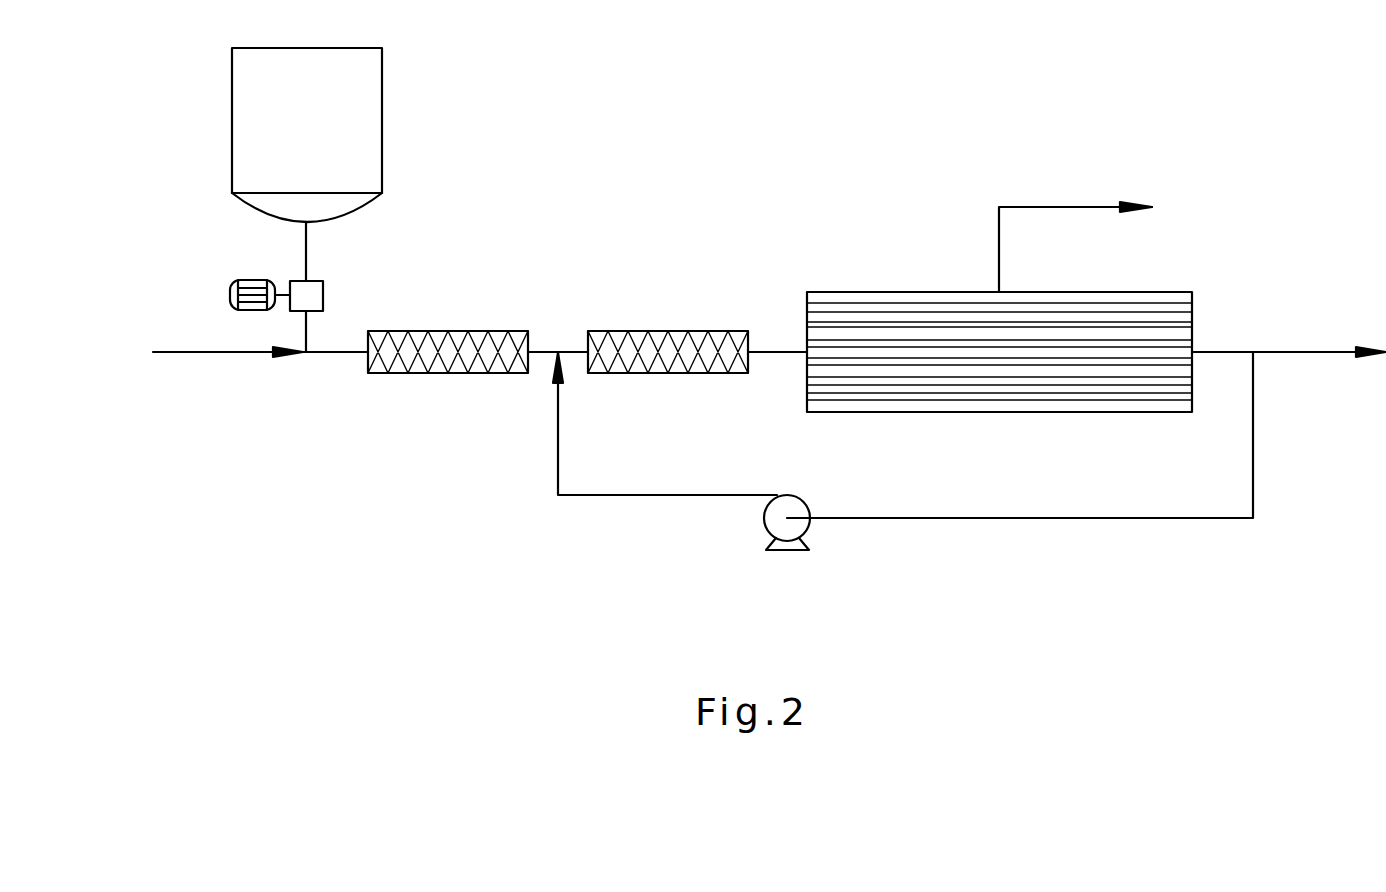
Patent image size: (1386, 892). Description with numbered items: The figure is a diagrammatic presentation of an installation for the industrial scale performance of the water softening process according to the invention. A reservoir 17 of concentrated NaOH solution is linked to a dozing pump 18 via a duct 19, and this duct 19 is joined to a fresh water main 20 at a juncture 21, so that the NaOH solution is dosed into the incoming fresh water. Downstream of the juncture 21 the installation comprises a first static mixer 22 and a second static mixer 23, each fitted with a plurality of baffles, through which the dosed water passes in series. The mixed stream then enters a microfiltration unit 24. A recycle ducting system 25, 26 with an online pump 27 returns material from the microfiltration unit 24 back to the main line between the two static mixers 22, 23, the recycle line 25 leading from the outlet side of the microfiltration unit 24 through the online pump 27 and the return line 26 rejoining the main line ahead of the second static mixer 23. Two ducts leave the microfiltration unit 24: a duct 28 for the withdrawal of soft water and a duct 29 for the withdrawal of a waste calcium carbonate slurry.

The reservoir 17 is at (368, 112).
The dozing pump 18 is at (288, 292).
The duct 19 is at (309, 256).
The fresh water main 20 is at (226, 350).
The juncture 21 is at (306, 354).
The first static mixer 22 is at (448, 330).
The second static mixer 23 is at (667, 330).
The microfiltration unit 24 is at (886, 295).
The recycle ducting system 25 is at (990, 516).
The recycle ducting system 26 is at (555, 435).
The online pump 27 is at (799, 507).
The duct 28 is at (1056, 205).
The duct 29 is at (1299, 348).